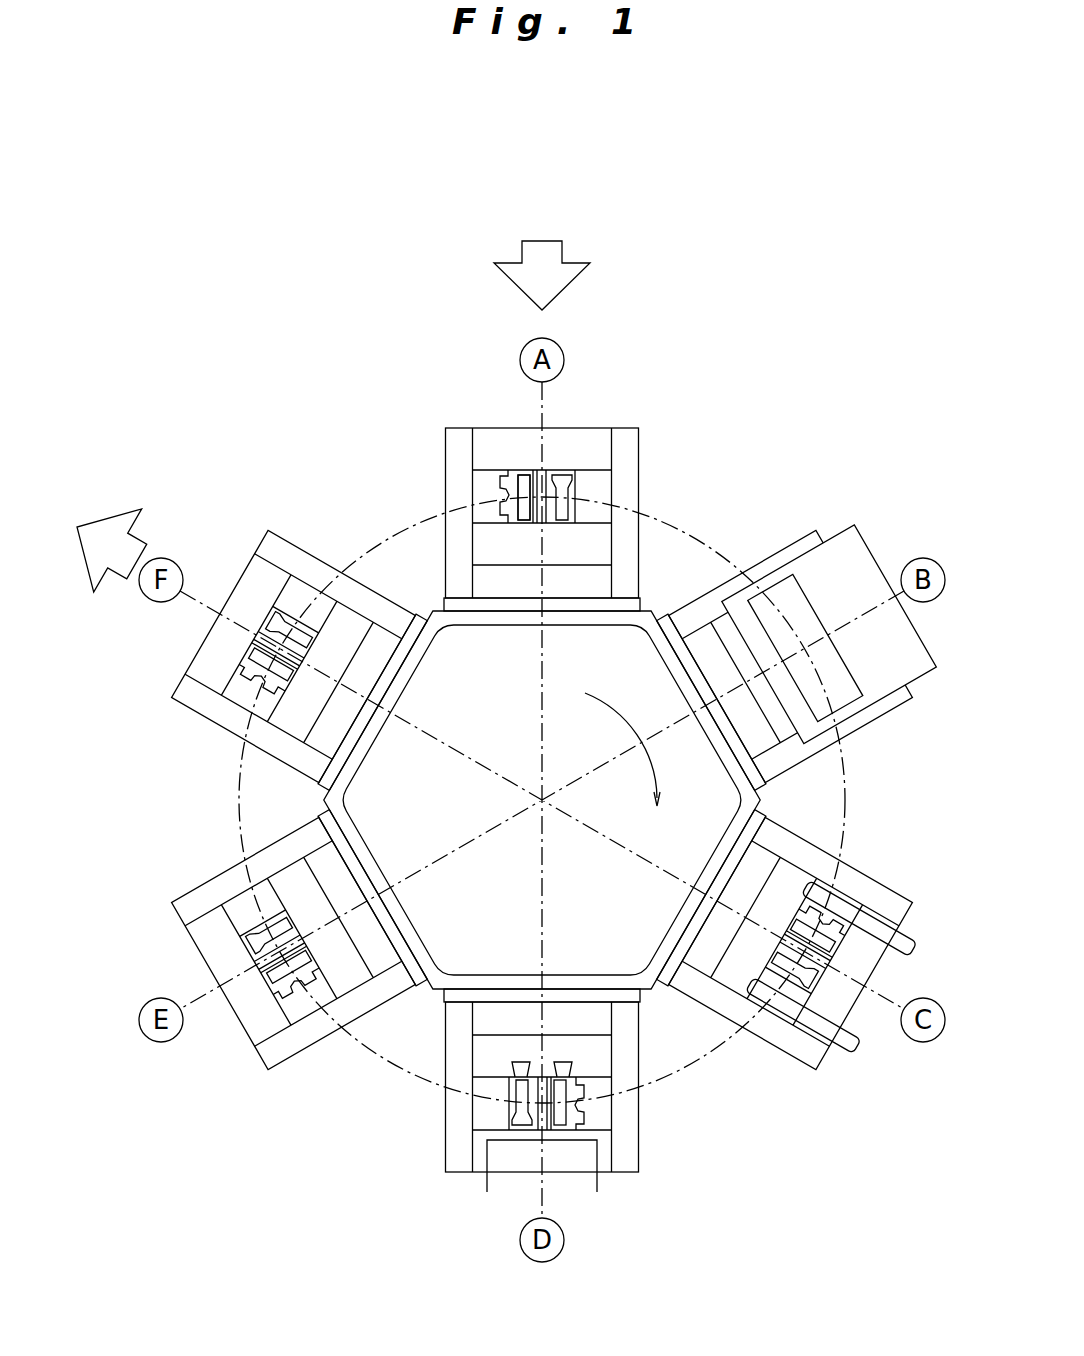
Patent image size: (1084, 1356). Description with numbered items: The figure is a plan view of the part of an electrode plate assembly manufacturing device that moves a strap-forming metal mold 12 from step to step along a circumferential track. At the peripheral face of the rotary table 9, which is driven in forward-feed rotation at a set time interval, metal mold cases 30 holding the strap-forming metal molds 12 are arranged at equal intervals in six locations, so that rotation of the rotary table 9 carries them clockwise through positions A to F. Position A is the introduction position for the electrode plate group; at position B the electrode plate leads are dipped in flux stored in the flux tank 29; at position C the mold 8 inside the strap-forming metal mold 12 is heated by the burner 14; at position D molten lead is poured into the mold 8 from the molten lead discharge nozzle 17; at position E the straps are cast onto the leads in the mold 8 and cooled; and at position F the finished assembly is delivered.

The mold 8 is at (522, 476).
The rotary table 9 is at (752, 793).
The strap-forming metal mold 12 is at (588, 488).
The burner 14 is at (873, 928).
The molten lead discharge nozzle 17 is at (573, 1162).
The flux tank 29 is at (916, 664).
The metal mold case 30 is at (641, 480).